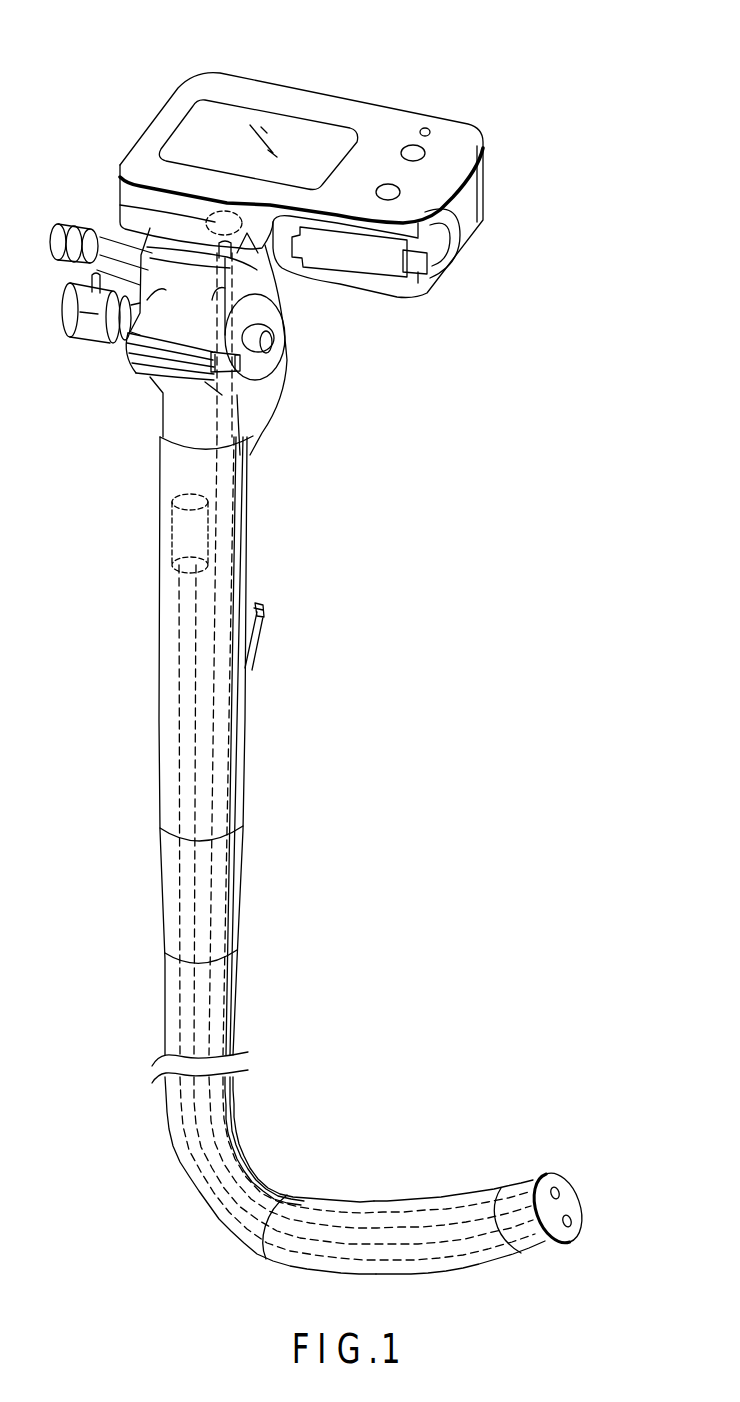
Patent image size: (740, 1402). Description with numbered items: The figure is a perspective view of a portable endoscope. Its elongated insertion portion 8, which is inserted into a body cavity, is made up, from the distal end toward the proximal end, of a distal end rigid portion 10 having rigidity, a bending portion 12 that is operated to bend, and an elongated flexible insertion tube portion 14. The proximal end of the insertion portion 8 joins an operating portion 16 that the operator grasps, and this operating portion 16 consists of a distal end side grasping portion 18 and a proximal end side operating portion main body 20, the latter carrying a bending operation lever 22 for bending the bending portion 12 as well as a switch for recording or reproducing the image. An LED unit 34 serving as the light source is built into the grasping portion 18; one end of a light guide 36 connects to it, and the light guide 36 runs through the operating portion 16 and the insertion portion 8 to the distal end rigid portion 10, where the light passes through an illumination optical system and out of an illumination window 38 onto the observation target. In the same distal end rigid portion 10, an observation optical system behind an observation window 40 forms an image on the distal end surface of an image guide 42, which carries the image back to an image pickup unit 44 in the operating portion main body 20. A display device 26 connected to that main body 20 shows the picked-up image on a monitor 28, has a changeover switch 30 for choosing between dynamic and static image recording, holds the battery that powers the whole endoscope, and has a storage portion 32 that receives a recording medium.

The insertion portion 8 is at (354, 970).
The distal end rigid portion 10 is at (534, 1172).
The bending portion 12 is at (414, 1194).
The insertion tube portion 14 is at (240, 1124).
The operating portion 16 is at (307, 472).
The grasping portion 18 is at (287, 603).
The operating portion main body 20 is at (299, 381).
The bending operation lever 22 is at (147, 357).
The display device 26 is at (462, 108).
The monitor 28 is at (228, 118).
The changeover switch 30 is at (440, 165).
The storage portion 32 is at (358, 263).
The LED unit 34 is at (180, 534).
The light guide 36 is at (188, 668).
The illumination window 38 is at (573, 1215).
The observation window 40 is at (559, 1188).
The image guide 42 is at (222, 666).
The image pickup unit 44 is at (222, 220).